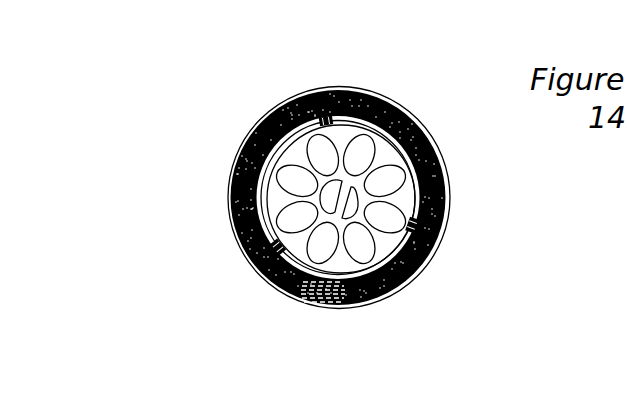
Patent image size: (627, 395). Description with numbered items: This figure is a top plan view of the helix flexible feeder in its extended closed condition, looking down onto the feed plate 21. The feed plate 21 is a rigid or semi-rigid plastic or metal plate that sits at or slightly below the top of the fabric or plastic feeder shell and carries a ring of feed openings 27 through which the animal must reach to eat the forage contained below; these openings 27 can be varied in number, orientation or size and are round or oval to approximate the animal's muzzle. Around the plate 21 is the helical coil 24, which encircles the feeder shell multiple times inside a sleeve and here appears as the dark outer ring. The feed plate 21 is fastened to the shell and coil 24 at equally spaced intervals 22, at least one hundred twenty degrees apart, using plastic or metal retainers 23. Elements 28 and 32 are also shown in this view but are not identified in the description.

The feed plate 21 is at (383, 155).
The equally spaced intervals 22 is at (322, 90).
The retainers 23 is at (237, 227).
The helical coil 24 is at (323, 320).
The feed openings 27 is at (398, 172).
The central axle opening 28 is at (350, 197).
The retaining clip 32 is at (318, 90).